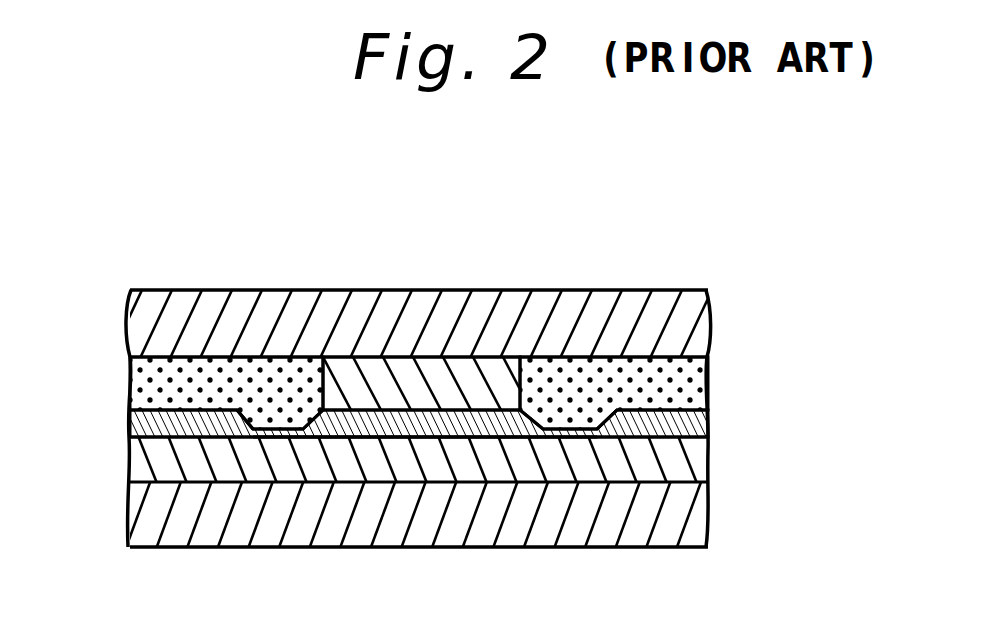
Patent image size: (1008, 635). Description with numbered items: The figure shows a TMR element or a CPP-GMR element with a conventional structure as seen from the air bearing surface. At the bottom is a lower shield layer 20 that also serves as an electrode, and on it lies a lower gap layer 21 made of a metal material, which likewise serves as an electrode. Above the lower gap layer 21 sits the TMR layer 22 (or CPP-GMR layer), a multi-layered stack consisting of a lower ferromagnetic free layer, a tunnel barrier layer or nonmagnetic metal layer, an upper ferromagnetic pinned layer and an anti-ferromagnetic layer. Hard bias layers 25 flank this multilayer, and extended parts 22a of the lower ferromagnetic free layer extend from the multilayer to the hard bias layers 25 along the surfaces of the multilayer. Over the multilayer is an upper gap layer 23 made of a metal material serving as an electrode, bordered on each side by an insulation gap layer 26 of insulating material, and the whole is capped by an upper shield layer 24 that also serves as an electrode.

The lower shield layer 20 is at (683, 518).
The lower gap layer 21 is at (682, 462).
The TMR layer 22 is at (458, 426).
The extended parts 22a is at (270, 440).
The upper gap layer 23 is at (449, 380).
The upper shield layer 24 is at (685, 312).
The hard bias layers 25 is at (136, 416).
The insulation gap layer 26 is at (130, 360).